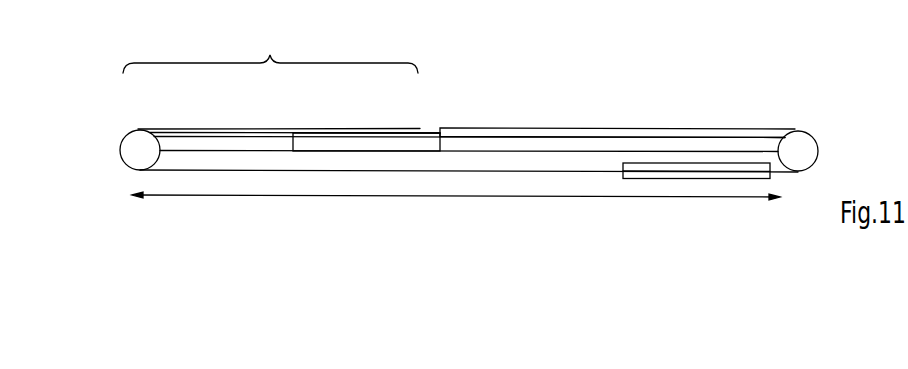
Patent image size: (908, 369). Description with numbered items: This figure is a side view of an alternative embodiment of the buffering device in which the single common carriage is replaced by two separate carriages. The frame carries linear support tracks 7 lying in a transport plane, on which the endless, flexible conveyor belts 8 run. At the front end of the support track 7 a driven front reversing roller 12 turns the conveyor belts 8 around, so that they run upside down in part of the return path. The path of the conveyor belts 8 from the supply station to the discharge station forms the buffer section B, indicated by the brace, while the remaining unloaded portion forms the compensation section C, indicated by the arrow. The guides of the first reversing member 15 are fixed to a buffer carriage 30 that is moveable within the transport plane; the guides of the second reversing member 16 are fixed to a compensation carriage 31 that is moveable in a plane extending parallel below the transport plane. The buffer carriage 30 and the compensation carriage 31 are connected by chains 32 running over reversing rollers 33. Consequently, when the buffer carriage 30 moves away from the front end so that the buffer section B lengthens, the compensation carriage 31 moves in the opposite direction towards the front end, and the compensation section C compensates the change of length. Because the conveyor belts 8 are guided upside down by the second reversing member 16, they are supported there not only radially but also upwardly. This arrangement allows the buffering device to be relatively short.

The front reversing roller 12 is at (145, 130).
The conveyor belt 8 is at (225, 129).
The first reversing member 15 is at (348, 132).
The buffer carriage 30 is at (383, 131).
The support track 7 is at (527, 136).
The compensation carriage 31 is at (651, 173).
The second reversing member 16 is at (688, 163).
The chain 32 is at (770, 150).
The reversing roller 33 is at (793, 142).
The buffer section B is at (270, 51).
The compensation section C is at (680, 200).